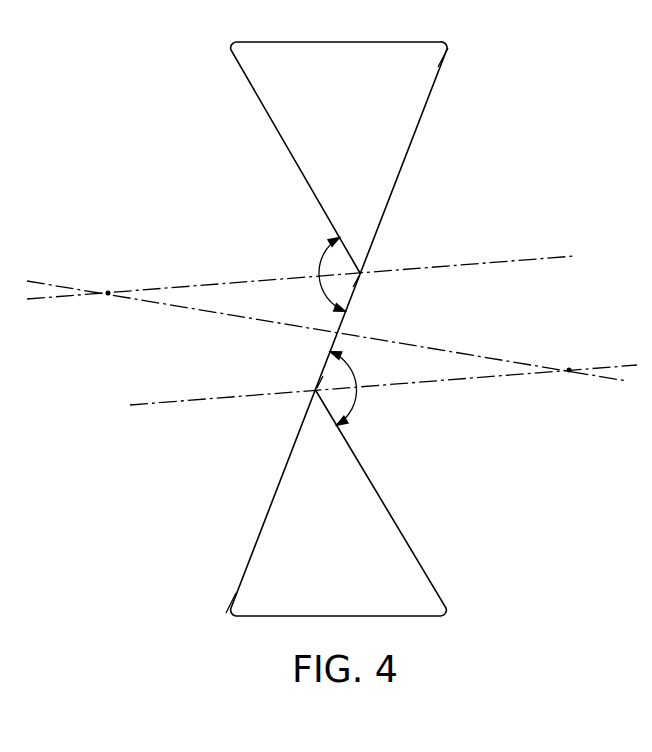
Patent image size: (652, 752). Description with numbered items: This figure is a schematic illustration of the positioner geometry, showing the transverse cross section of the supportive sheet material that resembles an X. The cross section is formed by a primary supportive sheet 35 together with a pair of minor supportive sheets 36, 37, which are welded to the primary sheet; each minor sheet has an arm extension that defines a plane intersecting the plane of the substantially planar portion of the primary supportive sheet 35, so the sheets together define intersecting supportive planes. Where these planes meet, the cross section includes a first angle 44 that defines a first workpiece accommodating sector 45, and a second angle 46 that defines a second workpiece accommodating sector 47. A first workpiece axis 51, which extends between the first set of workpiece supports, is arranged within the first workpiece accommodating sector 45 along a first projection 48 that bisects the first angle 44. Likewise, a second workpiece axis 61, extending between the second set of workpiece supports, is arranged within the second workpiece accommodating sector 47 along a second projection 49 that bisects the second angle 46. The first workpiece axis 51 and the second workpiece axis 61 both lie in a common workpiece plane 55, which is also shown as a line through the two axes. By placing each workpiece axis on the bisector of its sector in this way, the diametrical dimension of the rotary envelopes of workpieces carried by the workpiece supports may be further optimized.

The primary supportive sheet 35 is at (404, 167).
The minor supportive sheet 36 is at (272, 127).
The minor supportive sheet 37 is at (394, 523).
The first angle 44 is at (356, 398).
The first workpiece accommodating sector 45 is at (428, 376).
The second angle 46 is at (327, 243).
The second workpiece accommodating sector 47 is at (291, 313).
The first projection 48 is at (40, 299).
The second projection 49 is at (612, 366).
The first workpiece axis 51 is at (569, 370).
The common workpiece plane 55 is at (615, 379).
The second workpiece axis 61 is at (108, 293).